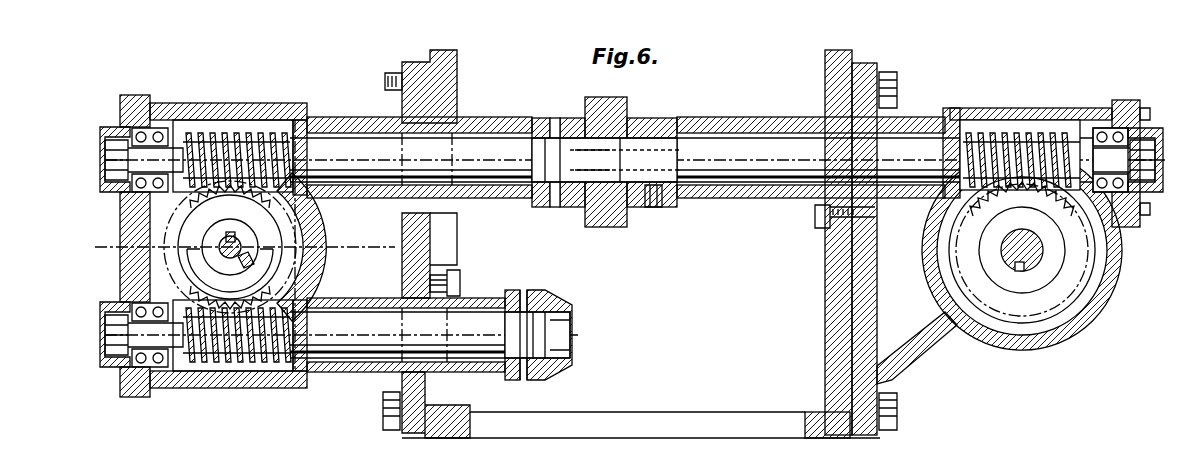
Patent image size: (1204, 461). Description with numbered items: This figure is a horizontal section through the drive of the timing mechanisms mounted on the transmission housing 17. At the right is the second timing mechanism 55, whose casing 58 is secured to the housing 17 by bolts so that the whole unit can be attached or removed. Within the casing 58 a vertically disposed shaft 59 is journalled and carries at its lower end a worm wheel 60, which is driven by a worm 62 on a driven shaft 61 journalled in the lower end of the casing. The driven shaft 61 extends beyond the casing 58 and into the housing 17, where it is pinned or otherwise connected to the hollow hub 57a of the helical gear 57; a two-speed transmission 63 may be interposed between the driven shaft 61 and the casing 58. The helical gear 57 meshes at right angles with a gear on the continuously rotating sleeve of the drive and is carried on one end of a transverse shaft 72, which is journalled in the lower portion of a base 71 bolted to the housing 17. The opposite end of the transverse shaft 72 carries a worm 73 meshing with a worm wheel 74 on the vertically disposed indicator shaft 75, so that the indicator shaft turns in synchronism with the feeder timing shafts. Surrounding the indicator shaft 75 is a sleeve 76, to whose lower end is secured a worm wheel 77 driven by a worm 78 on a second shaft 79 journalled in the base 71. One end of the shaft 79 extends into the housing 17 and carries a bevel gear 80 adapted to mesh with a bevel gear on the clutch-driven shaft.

The housing 17 is at (825, 290).
The second timing mechanism 55 is at (1055, 345).
The helical gear 57 is at (604, 210).
The hollow hub 57a is at (676, 215).
The casing 58 is at (1122, 265).
The vertically disposed shaft 59 is at (1044, 251).
The worm wheel 60 is at (1087, 290).
The driven shaft 61 is at (760, 150).
The worm 62 is at (1012, 140).
The two-speed transmission 63 is at (897, 85).
The base 71 is at (415, 74).
The transverse shaft 72 is at (482, 148).
The worm 73 is at (242, 135).
The worm wheel 74 is at (165, 227).
The indicator shaft 75 is at (250, 241).
The sleeve 76 is at (252, 262).
The worm wheel 77 is at (155, 270).
The worm 78 is at (212, 362).
The shaft 79 is at (356, 340).
The bevel gear 80 is at (573, 360).